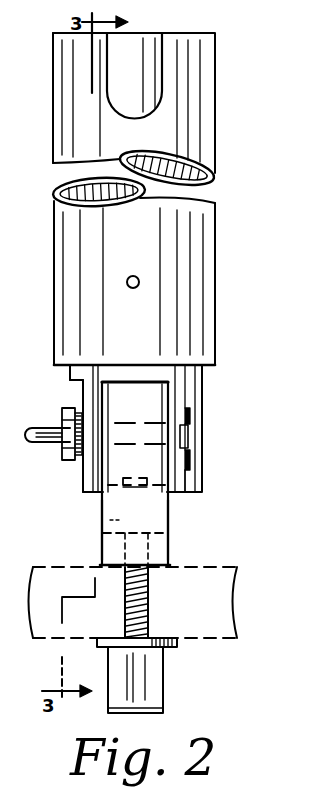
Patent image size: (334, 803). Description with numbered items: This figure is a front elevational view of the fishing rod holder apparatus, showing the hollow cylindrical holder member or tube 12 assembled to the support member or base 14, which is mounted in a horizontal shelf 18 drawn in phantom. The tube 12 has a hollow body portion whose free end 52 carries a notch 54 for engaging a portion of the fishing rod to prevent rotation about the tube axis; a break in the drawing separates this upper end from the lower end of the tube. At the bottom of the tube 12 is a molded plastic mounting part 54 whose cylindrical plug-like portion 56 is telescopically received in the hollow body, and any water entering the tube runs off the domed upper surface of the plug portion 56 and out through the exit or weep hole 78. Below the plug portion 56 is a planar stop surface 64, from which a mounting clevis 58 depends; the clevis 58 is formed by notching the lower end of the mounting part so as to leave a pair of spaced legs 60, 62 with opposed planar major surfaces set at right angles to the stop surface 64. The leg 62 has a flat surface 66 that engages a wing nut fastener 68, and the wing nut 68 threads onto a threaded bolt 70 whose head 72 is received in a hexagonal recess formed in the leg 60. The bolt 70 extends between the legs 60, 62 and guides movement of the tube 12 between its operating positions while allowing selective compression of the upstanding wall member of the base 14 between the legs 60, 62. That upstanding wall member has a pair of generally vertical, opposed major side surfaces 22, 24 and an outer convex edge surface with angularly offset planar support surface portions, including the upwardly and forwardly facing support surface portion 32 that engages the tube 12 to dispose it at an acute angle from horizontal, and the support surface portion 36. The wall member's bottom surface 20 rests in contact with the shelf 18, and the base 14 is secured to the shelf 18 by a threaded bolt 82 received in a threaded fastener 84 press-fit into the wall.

The hollow cylindrical holder member or tube 12 is at (161, 241).
The free end 52 is at (193, 34).
The notch / mounting part 54 is at (127, 107).
The exit or weep hole 78 is at (140, 276).
The stop surface 64 is at (119, 380).
The cylindrical plug-like portion 56 is at (143, 376).
The flat surface 66 is at (78, 387).
The wing nut fastener 68 is at (65, 408).
The threaded bolt 70 is at (53, 446).
The mounting clevis 58 is at (214, 400).
The head 72 is at (190, 432).
The leg 60 is at (190, 482).
The leg 62 is at (82, 473).
The support surface portion 32 is at (135, 442).
The threaded fastener 84 is at (104, 522).
The major side surface 22 is at (103, 505).
The major side surface 24 is at (168, 505).
The support member or base 14 is at (172, 534).
The support surface portion 36 is at (115, 550).
The horizontal shelf 18 is at (230, 574).
The threaded bolt 82 is at (148, 618).
The bottom surface 20 is at (160, 568).